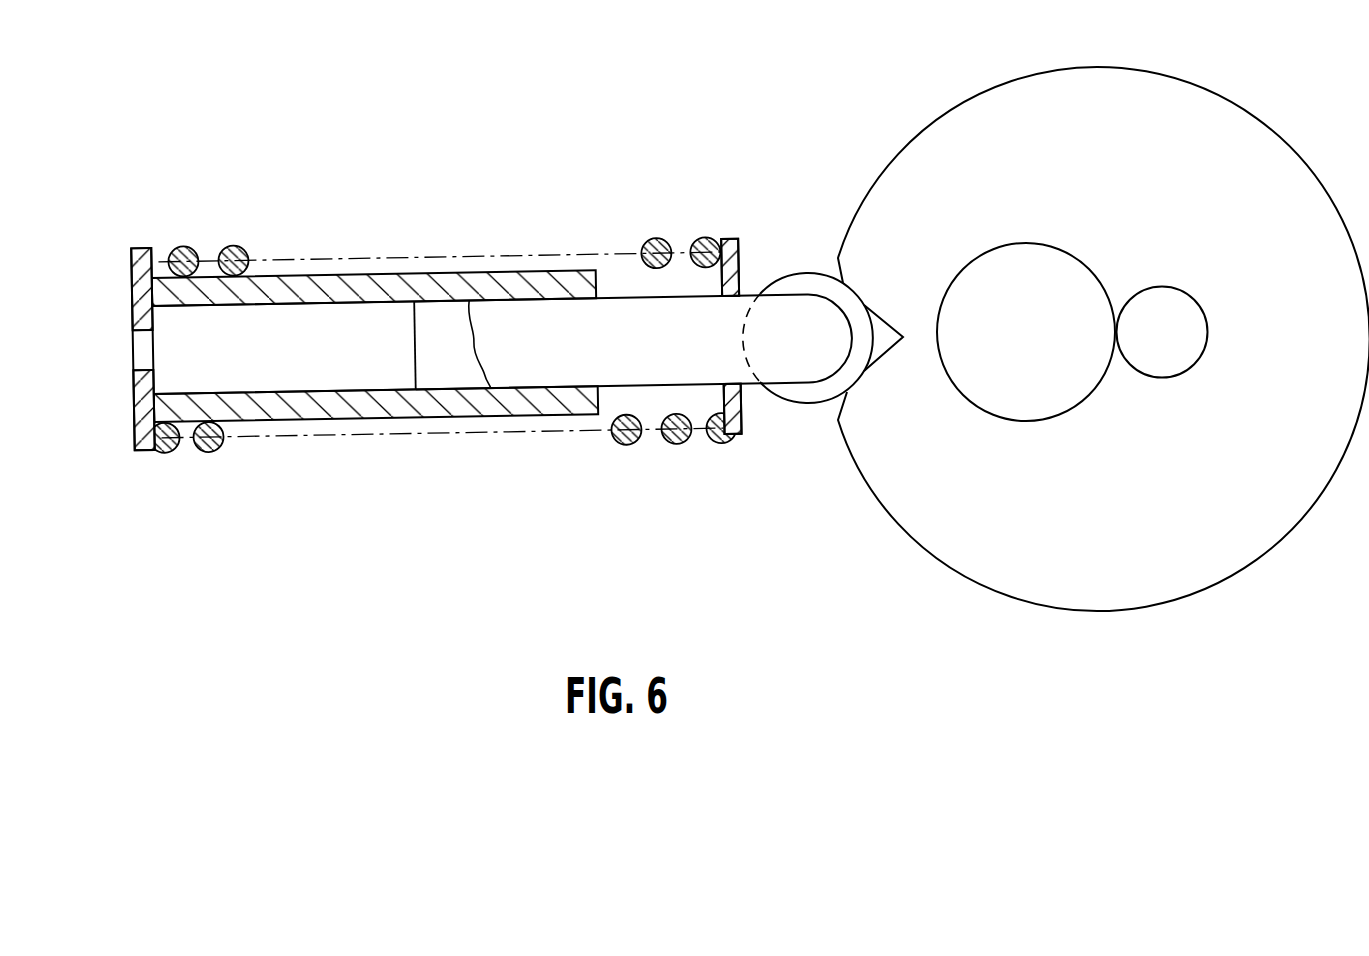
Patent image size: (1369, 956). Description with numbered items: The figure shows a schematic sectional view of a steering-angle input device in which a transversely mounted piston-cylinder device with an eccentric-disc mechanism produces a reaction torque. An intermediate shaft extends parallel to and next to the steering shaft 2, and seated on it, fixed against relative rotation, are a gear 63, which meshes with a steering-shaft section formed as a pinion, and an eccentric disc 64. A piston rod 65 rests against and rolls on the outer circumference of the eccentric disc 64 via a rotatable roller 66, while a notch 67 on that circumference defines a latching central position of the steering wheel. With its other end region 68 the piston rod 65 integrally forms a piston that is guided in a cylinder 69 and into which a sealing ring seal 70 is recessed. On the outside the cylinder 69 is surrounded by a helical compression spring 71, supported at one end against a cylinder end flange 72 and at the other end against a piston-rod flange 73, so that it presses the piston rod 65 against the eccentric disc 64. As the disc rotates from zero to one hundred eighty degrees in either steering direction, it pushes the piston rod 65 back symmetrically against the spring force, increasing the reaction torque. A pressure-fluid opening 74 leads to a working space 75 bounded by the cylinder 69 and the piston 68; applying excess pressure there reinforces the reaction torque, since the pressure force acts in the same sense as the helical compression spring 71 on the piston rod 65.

The steering shaft 2 is at (1192, 357).
The gear 63 is at (990, 390).
The eccentric disc 64 is at (945, 565).
The piston rod 65 is at (774, 372).
The rotatable roller 66 is at (805, 397).
The notch 67 is at (876, 320).
The piston 68 is at (425, 313).
The cylinder 69 is at (387, 408).
The sealing ring seal 70 is at (455, 392).
The helical compression spring 71 is at (240, 260).
The cylinder end flange 72 is at (143, 252).
The piston-rod flange 73 is at (731, 262).
The pressure-fluid opening 74 is at (135, 362).
The working space 75 is at (288, 372).